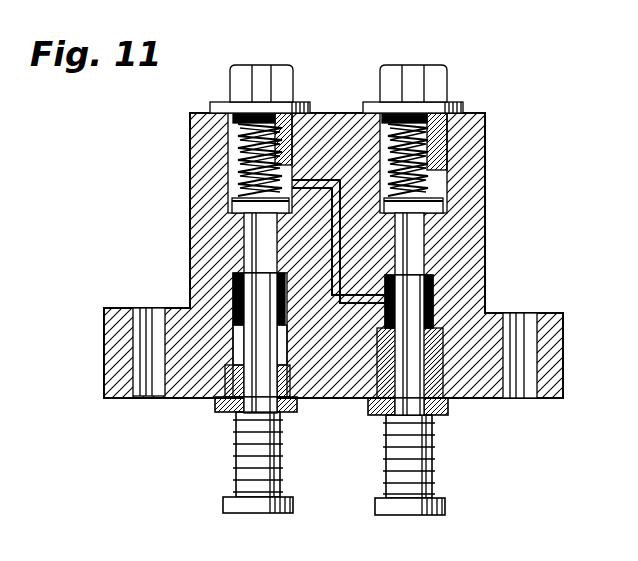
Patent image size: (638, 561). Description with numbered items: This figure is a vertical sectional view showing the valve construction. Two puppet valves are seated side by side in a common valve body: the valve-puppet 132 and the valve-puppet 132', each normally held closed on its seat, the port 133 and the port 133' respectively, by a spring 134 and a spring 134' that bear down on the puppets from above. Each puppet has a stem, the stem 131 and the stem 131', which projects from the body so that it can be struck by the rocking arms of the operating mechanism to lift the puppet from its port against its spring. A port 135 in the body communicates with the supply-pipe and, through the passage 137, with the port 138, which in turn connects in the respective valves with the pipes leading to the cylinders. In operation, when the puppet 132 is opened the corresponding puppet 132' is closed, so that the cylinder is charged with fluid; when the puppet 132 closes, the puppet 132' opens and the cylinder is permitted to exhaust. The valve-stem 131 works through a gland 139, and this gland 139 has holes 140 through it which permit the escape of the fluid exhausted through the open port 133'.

The stem 131 is at (410, 528).
The stem 131' is at (258, 527).
The valve-puppet 132 is at (468, 212).
The valve-puppet 132' is at (202, 210).
The port 133 is at (474, 244).
The port 133' is at (196, 243).
The spring 134 is at (464, 311).
The spring 134' is at (235, 310).
The port 135 is at (440, 170).
The passage 137 is at (322, 178).
The port 138 is at (245, 195).
The gland 139 is at (225, 405).
The holes 140 is at (232, 412).